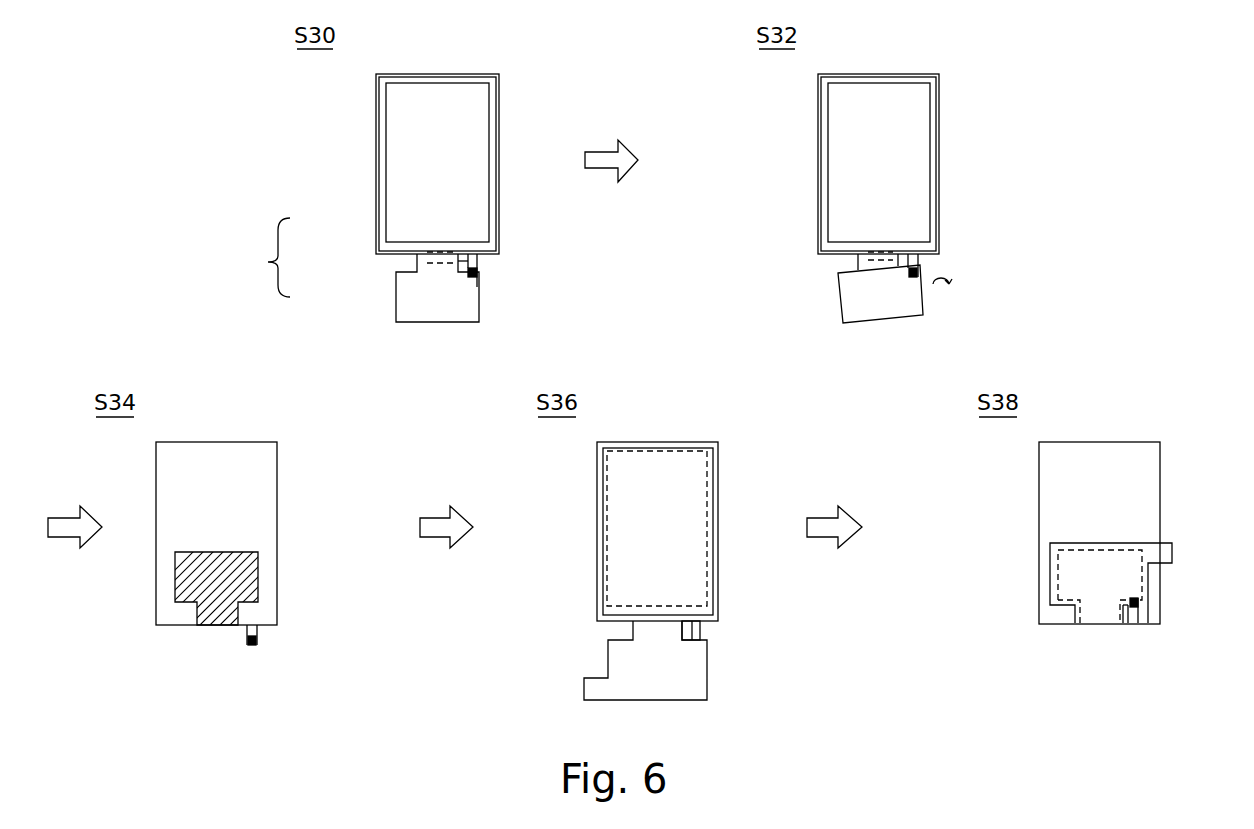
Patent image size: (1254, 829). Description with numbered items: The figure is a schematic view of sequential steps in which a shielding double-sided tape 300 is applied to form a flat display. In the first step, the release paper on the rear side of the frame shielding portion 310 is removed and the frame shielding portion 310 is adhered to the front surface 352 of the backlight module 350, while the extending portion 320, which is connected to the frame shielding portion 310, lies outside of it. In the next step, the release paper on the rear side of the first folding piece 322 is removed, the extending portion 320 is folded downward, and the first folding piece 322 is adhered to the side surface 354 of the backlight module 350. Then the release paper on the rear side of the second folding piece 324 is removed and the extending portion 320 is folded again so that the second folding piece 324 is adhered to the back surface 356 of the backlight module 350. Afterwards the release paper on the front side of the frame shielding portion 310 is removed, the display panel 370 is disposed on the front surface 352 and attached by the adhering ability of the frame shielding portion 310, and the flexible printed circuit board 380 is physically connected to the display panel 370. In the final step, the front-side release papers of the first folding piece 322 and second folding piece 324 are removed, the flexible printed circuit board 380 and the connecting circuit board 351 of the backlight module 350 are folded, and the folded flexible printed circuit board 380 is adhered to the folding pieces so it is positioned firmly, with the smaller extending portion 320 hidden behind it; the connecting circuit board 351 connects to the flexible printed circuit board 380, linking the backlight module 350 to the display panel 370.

The shielding double-sided tape 300 is at (255, 257).
The frame shielding portion 310 is at (430, 250).
The extending portion 320 is at (440, 262).
The first folding piece 322 is at (858, 258).
The second folding piece 324 is at (858, 294).
The backlight module 350 is at (500, 92).
The connecting circuit board 351 is at (478, 262).
The front surface 352 is at (420, 160).
The side surface 354 is at (933, 255).
The back surface 356 is at (200, 527).
The display panel 370 is at (600, 532).
The flexible printed circuit board 380 is at (697, 667).